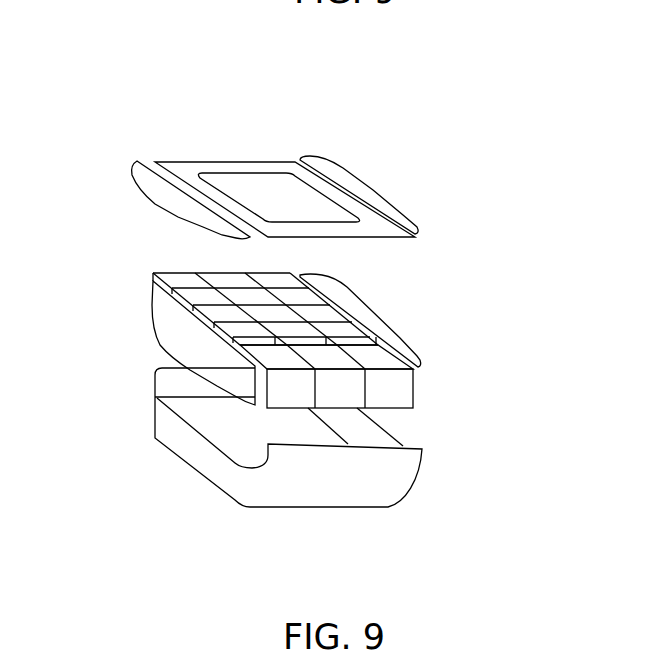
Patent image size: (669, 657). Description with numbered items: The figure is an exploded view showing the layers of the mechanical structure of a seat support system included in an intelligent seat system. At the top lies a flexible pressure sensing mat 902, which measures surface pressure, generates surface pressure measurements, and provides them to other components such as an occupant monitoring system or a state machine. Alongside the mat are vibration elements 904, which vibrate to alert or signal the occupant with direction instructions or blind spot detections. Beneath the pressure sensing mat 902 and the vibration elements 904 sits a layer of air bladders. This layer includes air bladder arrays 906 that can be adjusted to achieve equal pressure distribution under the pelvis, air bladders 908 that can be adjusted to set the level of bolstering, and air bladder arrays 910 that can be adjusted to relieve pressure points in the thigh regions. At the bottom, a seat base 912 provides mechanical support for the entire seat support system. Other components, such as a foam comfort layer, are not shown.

The flexible pressure sensing mat 902 is at (258, 178).
The vibration elements 904 is at (320, 163).
The air bladder arrays 906 is at (253, 289).
The air bladders 908 is at (160, 343).
The air bladder arrays 910 is at (292, 387).
The seat base 912 is at (192, 453).